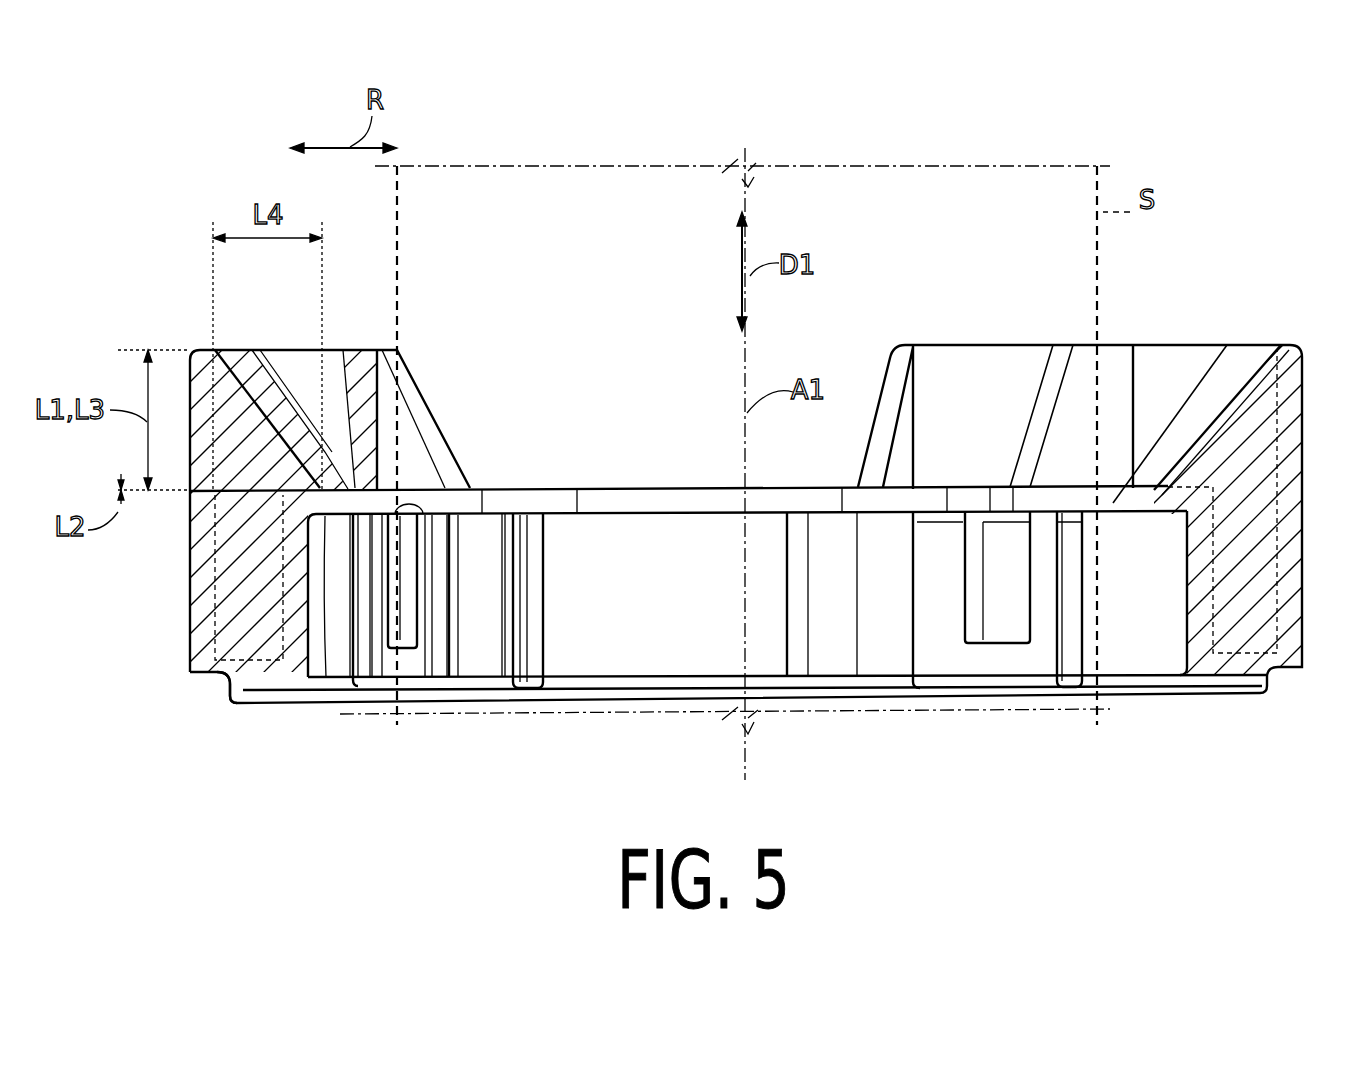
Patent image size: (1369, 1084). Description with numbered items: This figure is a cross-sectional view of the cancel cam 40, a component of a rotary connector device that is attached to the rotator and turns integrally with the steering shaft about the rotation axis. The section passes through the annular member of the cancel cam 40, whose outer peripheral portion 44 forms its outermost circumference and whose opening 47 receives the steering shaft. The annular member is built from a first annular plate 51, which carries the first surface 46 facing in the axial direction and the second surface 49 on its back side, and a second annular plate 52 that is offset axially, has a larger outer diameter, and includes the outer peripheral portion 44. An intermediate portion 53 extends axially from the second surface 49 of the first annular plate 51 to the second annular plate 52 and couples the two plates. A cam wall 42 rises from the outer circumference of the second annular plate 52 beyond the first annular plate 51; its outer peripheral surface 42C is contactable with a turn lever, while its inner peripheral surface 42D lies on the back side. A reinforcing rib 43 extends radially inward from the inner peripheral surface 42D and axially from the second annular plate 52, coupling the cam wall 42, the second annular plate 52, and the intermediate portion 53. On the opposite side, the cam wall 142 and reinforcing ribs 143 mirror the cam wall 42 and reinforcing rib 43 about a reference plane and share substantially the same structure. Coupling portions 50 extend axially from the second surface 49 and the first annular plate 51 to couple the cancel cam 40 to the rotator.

The cancel cam 40 is at (922, 266).
The cam wall 42 is at (203, 578).
The outer peripheral surface 42C is at (191, 397).
The inner peripheral surface 42D is at (193, 597).
The reinforcing rib 43 is at (410, 376).
The outer peripheral portion 44 is at (204, 684).
The first surface 46 is at (340, 488).
The opening 47 is at (413, 650).
The second surface 49 is at (343, 640).
The coupling portion 50 is at (455, 640).
The first annular plate 51 is at (385, 652).
The second annular plate 52 is at (257, 691).
The intermediate portion 53 is at (305, 610).
The cam wall 142 is at (1302, 472).
The reinforcing rib 143 is at (886, 408).